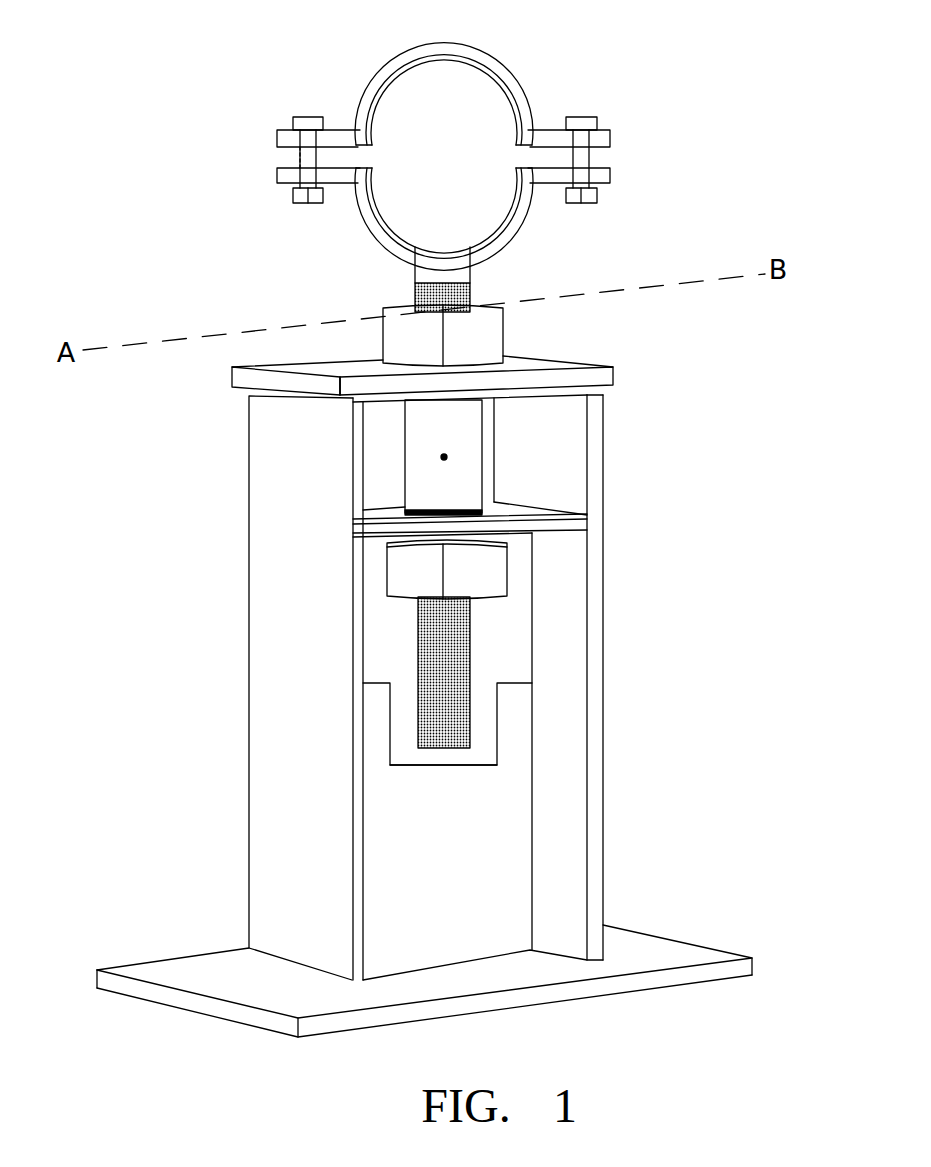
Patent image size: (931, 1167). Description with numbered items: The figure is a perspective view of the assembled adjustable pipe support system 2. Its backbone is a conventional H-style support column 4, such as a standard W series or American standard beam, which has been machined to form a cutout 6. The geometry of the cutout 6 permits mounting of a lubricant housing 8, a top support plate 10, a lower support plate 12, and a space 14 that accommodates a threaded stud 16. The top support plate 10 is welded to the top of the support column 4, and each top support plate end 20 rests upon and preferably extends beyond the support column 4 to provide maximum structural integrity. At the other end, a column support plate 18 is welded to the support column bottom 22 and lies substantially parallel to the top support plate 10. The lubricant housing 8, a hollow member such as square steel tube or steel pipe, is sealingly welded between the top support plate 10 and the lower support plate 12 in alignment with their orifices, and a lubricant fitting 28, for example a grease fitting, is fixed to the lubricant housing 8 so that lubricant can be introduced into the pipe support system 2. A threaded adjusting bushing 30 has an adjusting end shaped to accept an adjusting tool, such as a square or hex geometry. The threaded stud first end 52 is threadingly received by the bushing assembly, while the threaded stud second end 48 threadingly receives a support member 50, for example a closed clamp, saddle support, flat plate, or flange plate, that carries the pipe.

The pipe support system 2 is at (444, 52).
The support member 50 is at (513, 97).
The threaded stud second end 48 is at (471, 296).
The threaded adjusting bushing 30 is at (503, 331).
The top support plate 10 is at (613, 374).
The top support plate end 20 is at (240, 377).
The support column 4 is at (603, 454).
The lubricant housing 8 is at (432, 436).
The lubricant fitting 28 is at (444, 460).
The lower support plate 12 is at (582, 523).
The cutout 6 is at (513, 638).
The threaded stud 16 is at (470, 678).
The threaded stud first end 52 is at (412, 663).
The space 14 is at (478, 751).
The column support plate 18 is at (752, 967).
The support column bottom 22 is at (297, 968).